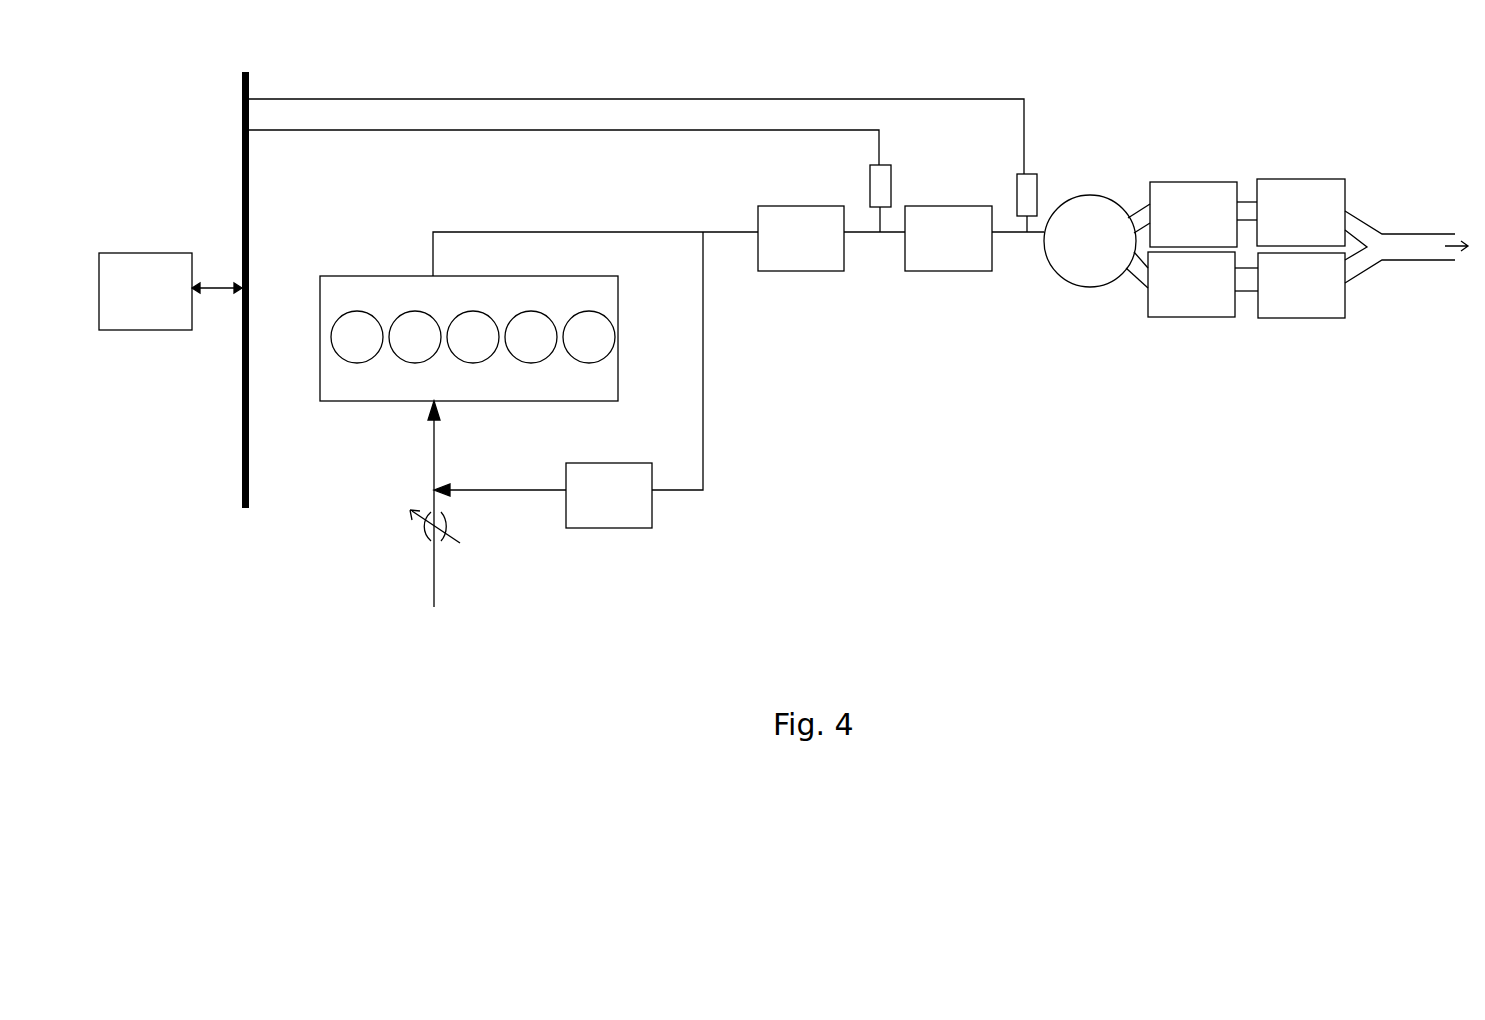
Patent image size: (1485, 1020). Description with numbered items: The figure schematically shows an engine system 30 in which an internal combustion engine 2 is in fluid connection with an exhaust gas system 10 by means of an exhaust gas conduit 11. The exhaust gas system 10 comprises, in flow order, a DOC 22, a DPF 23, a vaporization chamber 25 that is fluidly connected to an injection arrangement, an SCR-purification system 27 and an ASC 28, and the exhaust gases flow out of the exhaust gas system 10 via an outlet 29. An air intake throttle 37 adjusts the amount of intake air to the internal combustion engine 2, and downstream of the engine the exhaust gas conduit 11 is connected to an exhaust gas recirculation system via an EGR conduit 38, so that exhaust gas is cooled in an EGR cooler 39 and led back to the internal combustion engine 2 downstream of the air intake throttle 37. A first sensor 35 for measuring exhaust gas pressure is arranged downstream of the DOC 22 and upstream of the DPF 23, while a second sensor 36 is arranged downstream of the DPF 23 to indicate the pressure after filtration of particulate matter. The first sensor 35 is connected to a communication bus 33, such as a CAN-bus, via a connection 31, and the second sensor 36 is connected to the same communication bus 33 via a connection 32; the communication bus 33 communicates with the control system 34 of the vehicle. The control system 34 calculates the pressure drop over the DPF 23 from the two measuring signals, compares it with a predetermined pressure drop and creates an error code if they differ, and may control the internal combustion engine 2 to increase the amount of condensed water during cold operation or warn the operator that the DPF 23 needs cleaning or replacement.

The internal combustion engine 2 is at (520, 401).
The exhaust gas system 10 is at (1082, 151).
The exhaust gas conduit 11 is at (448, 232).
The DOC 22 is at (787, 271).
The DPF 23 is at (955, 271).
The vaporization chamber 25 is at (1090, 287).
The SCR-purification system 27 is at (1197, 317).
The ASC 28 is at (1305, 318).
The outlet 29 is at (1418, 260).
The engine system 30 is at (748, 79).
The connection 31 is at (583, 132).
The connection 32 is at (442, 99).
The communication bus 33 is at (242, 160).
The control system 34 is at (137, 253).
The first sensor 35 is at (870, 190).
The second sensor 36 is at (1017, 178).
The air intake throttle 37 is at (445, 540).
The EGR conduit 38 is at (705, 425).
The EGR cooler 39 is at (625, 528).